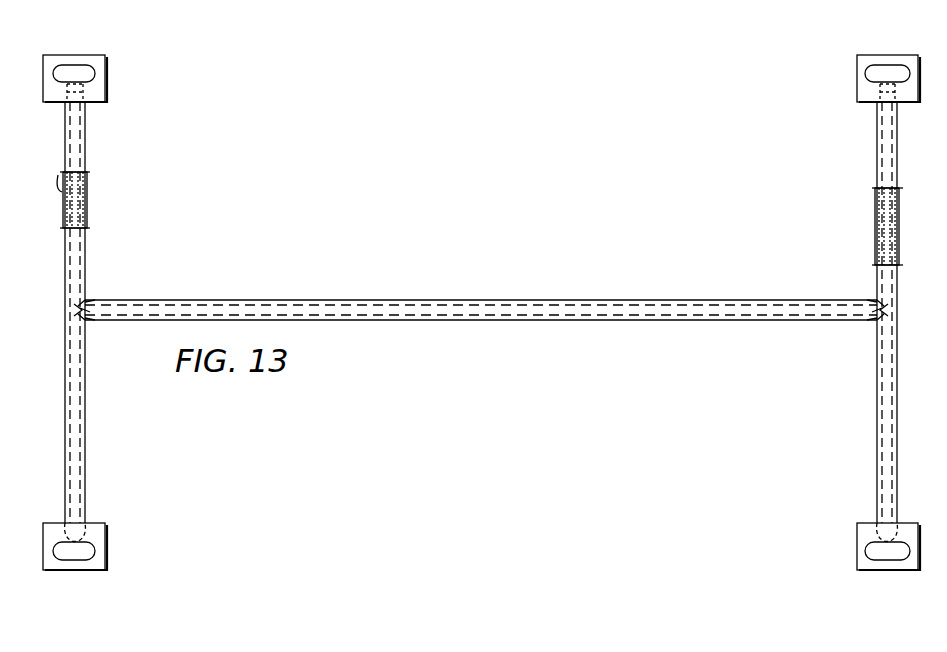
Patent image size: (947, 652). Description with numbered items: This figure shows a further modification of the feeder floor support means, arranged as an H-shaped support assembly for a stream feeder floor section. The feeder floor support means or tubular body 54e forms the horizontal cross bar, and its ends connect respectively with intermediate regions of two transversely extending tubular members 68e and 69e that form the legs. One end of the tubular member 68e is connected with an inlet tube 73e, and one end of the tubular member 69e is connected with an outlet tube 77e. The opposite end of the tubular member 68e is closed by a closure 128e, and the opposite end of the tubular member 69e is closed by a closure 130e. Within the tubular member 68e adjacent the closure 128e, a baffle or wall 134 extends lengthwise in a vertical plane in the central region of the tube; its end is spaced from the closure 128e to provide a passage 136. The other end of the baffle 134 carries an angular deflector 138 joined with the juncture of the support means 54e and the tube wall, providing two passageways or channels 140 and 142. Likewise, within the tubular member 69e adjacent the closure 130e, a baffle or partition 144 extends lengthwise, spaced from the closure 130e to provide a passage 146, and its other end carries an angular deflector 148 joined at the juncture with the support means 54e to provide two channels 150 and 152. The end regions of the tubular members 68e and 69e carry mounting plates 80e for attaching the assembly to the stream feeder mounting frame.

The feeder floor support means 54e is at (424, 297).
The tubular member 68e is at (85, 410).
The tubular member 69e is at (877, 405).
The inlet tube 73e is at (90, 530).
The outlet tube 77e is at (880, 537).
The mounting plates 80e is at (48, 55).
The closure 128e is at (75, 72).
The closure 130e is at (872, 75).
The baffle 134 is at (76, 198).
The passage 136 is at (78, 95).
The deflector 138 is at (75, 308).
The passageway 140 is at (73, 176).
The passageway 142 is at (60, 186).
The baffle 144 is at (886, 212).
The passage 146 is at (880, 95).
The deflector 148 is at (882, 312).
The passageway 150 is at (890, 190).
The passageway 152 is at (880, 190).